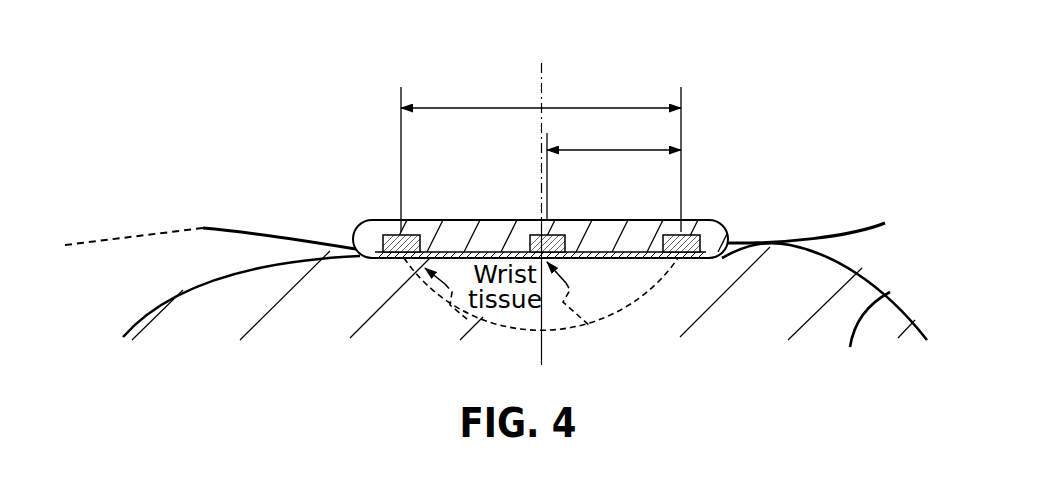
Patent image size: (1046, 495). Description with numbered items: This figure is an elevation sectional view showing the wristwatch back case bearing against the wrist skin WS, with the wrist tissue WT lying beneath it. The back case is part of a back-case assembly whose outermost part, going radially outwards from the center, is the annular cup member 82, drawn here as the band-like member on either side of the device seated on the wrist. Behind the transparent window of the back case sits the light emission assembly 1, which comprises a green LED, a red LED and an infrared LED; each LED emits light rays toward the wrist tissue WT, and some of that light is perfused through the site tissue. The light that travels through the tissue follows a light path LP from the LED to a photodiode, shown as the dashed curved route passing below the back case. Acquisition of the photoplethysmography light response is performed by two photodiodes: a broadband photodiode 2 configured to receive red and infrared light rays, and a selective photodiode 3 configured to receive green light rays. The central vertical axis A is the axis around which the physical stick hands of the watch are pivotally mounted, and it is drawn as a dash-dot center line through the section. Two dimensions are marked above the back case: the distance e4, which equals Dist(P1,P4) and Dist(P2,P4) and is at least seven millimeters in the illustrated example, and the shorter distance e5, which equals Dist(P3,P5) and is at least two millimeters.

The light emission assembly 1 is at (690, 232).
The broadband photodiode 2 is at (393, 232).
The selective photodiode 3 is at (537, 232).
The annular cup member 82 is at (832, 233).
The axis A is at (543, 82).
The distance e4 is at (541, 155).
The distance e5 is at (614, 171).
The light path LP is at (556, 328).
The wrist tissue WT is at (588, 318).
The wrist skin WS is at (858, 335).